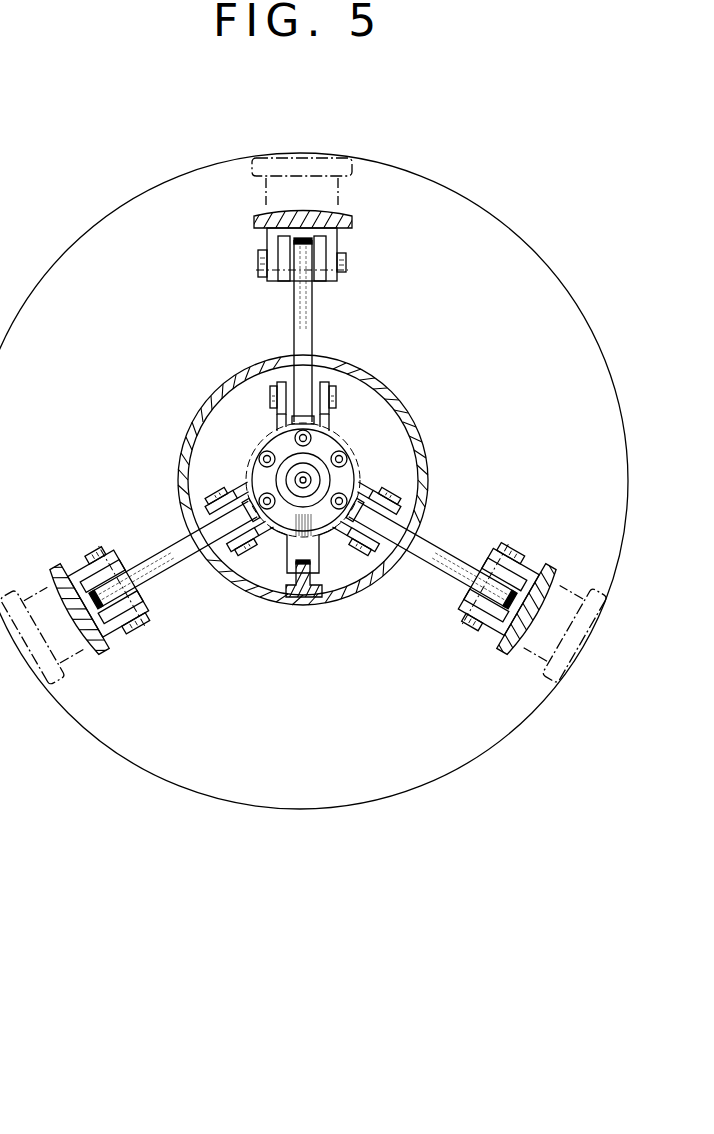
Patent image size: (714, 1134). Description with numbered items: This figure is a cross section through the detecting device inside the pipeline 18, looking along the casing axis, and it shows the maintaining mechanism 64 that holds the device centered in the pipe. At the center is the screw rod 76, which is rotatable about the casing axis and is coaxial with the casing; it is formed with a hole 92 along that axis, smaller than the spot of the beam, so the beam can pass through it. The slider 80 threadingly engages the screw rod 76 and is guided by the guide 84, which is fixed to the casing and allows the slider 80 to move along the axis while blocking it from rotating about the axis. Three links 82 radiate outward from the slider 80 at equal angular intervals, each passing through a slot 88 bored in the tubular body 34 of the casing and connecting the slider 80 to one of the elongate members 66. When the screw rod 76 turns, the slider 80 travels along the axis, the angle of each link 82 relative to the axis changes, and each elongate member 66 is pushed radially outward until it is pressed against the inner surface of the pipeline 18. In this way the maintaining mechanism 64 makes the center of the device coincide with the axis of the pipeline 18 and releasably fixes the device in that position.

The pipeline 18 is at (479, 208).
The tubular body 34 is at (356, 603).
The slot 88 is at (338, 333).
The slider 80 is at (341, 438).
The hole 92 is at (343, 466).
The screw rod 76 is at (321, 481).
The guide 84 is at (296, 601).
The link 82 is at (313, 302).
The maintaining mechanism 64 is at (262, 282).
The elongate member 66 is at (288, 165).